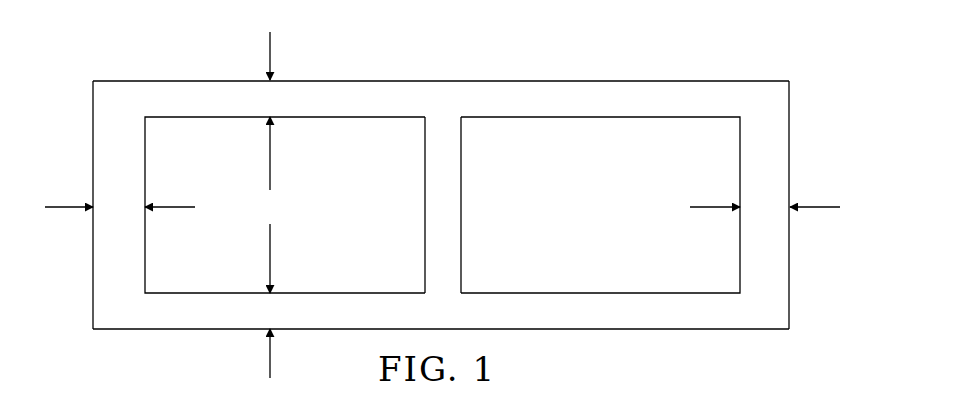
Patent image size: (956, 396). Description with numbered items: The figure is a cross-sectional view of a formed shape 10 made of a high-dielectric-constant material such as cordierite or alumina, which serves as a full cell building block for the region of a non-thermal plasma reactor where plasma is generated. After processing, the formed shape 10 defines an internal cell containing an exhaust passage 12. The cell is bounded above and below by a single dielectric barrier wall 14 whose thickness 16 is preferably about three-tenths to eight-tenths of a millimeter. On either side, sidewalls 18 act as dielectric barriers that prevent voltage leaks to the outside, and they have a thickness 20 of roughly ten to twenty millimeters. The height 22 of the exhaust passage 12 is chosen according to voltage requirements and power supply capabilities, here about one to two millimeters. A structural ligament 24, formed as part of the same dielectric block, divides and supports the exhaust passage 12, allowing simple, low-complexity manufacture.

The formed shape 10 is at (443, 201).
The exhaust passage 12 is at (203, 138).
The dielectric barrier wall 14 is at (296, 80).
The thickness 16 is at (270, 205).
The sidewalls 18 is at (93, 297).
The thickness 20 is at (442, 207).
The height 22 is at (270, 205).
The structural ligament 24 is at (453, 256).